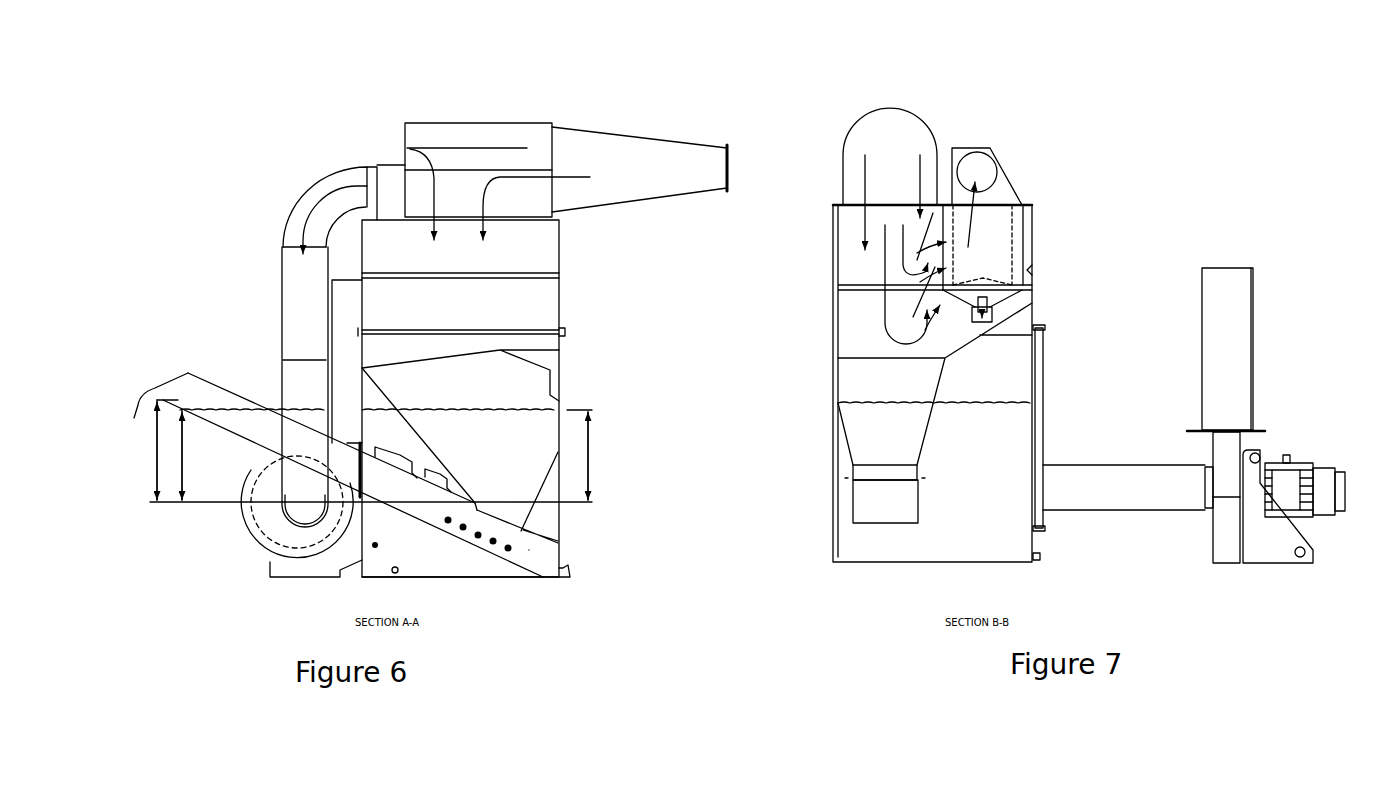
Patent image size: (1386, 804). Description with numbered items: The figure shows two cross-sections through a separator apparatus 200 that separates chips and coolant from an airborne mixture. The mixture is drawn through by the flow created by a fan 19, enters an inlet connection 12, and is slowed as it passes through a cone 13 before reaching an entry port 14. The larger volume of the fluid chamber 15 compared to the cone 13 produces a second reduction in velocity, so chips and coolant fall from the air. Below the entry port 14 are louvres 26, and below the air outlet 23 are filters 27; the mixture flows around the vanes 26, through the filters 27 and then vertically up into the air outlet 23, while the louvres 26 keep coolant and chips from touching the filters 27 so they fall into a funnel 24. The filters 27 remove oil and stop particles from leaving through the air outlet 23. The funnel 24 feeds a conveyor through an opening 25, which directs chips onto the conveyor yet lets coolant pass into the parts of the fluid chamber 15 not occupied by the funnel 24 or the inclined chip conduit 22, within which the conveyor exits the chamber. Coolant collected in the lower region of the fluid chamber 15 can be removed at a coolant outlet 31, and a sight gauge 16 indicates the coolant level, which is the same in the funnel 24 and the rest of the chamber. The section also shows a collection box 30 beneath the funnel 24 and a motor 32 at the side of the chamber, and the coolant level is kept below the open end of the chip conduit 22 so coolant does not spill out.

In FIG. 6, the separator apparatus 200 is at (291, 150).
In FIG. 7, the separator apparatus 200 is at (1130, 159).
In FIG. 6, the inlet connection 12 is at (732, 163).
In FIG. 6, the cone 13 is at (606, 157).
In FIG. 6, the entry port 14 is at (478, 130).
In FIG. 7, the entry port 14 is at (894, 134).
In FIG. 6, the fluid chamber 15 is at (565, 291).
In FIG. 7, the fluid chamber 15 is at (828, 301).
In FIG. 7, the sight gauge 16 is at (1040, 367).
In FIG. 6, the fan 19 is at (281, 519).
In FIG. 6, the chip conduit 22 is at (207, 389).
In FIG. 7, the air outlet 23 is at (984, 166).
In FIG. 6, the funnel 24 is at (509, 442).
In FIG. 7, the funnel 24 is at (893, 399).
In FIG. 6, the opening 25 is at (500, 516).
In FIG. 7, the opening 25 is at (881, 475).
In FIG. 7, the louvres 26 is at (923, 232).
In FIG. 7, the filters 27 is at (1021, 251).
In FIG. 6, the collection box 30 is at (530, 551).
In FIG. 7, the collection box 30 is at (879, 507).
In FIG. 7, the coolant outlet 31 is at (1040, 557).
In FIG. 7, the motor 32 is at (1315, 488).